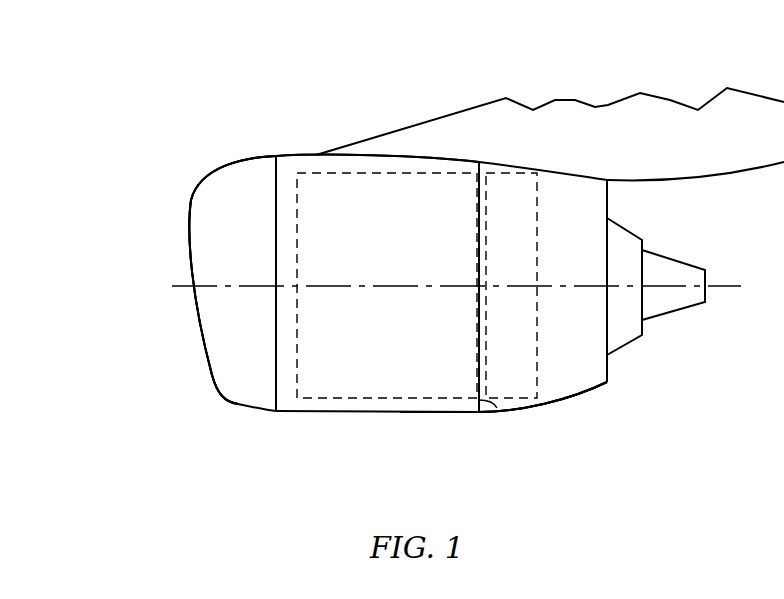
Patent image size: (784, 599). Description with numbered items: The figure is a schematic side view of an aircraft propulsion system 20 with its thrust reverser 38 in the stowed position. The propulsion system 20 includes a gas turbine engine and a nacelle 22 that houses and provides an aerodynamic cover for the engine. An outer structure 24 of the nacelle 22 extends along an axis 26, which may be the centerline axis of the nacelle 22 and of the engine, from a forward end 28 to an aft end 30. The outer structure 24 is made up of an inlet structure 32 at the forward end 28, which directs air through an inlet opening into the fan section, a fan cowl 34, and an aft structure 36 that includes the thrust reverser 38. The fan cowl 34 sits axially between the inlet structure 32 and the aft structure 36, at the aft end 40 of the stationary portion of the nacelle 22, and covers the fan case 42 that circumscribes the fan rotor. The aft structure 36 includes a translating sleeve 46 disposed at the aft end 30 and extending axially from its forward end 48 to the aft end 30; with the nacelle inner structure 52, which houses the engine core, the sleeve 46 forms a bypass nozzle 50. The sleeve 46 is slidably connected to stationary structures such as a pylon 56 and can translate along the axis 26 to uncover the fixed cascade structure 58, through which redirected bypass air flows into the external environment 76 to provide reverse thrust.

The aircraft propulsion system 20 is at (210, 144).
The nacelle 22 is at (257, 147).
The outer structure 24 is at (307, 152).
The axis 26 is at (738, 290).
The forward end 28 is at (190, 197).
The aft end 30 is at (608, 199).
The inlet structure 32 is at (235, 408).
The fan cowl 34 is at (281, 417).
The aft structure 36 is at (564, 420).
The thrust reverser 38 is at (476, 422).
The aft end of stationary portion 40 is at (497, 408).
The fan case 42 is at (352, 406).
The translating sleeve 46 is at (537, 412).
The forward end of translating sleeve 48 is at (465, 414).
The bypass nozzle 50 is at (609, 373).
The inner structure 52 is at (642, 334).
The pylon 56 is at (451, 115).
The fixed cascade structure 58 is at (503, 173).
The external environment 76 is at (356, 68).